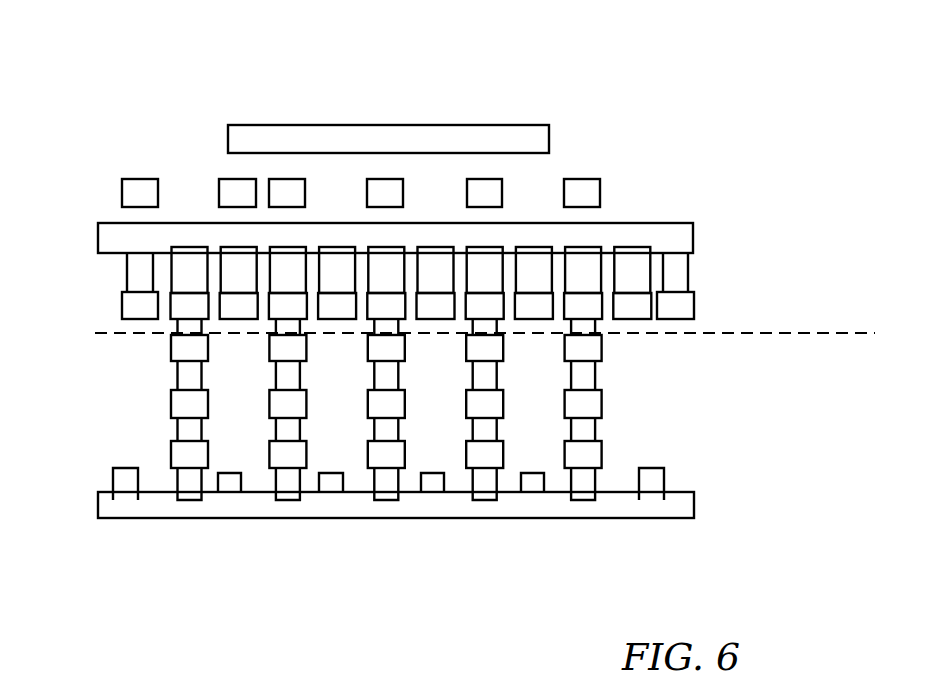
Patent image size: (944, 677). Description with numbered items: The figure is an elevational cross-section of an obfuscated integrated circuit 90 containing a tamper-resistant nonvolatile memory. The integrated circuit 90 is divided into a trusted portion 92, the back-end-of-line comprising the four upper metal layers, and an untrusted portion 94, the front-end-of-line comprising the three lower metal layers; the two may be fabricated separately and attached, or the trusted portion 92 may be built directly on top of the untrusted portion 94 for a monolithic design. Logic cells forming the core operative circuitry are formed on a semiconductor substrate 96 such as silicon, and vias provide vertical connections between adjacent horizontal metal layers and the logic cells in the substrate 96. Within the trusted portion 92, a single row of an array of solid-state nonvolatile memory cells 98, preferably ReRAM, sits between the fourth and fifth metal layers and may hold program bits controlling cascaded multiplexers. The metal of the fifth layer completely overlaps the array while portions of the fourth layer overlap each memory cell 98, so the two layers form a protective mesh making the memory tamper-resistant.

The integrated circuit 90 is at (156, 96).
The trusted portion (BEOL) 92 is at (736, 179).
The untrusted portion (FEOL) 94 is at (768, 491).
The semiconductor substrate 96 is at (332, 518).
The nonvolatile memory cells 98 is at (488, 247).